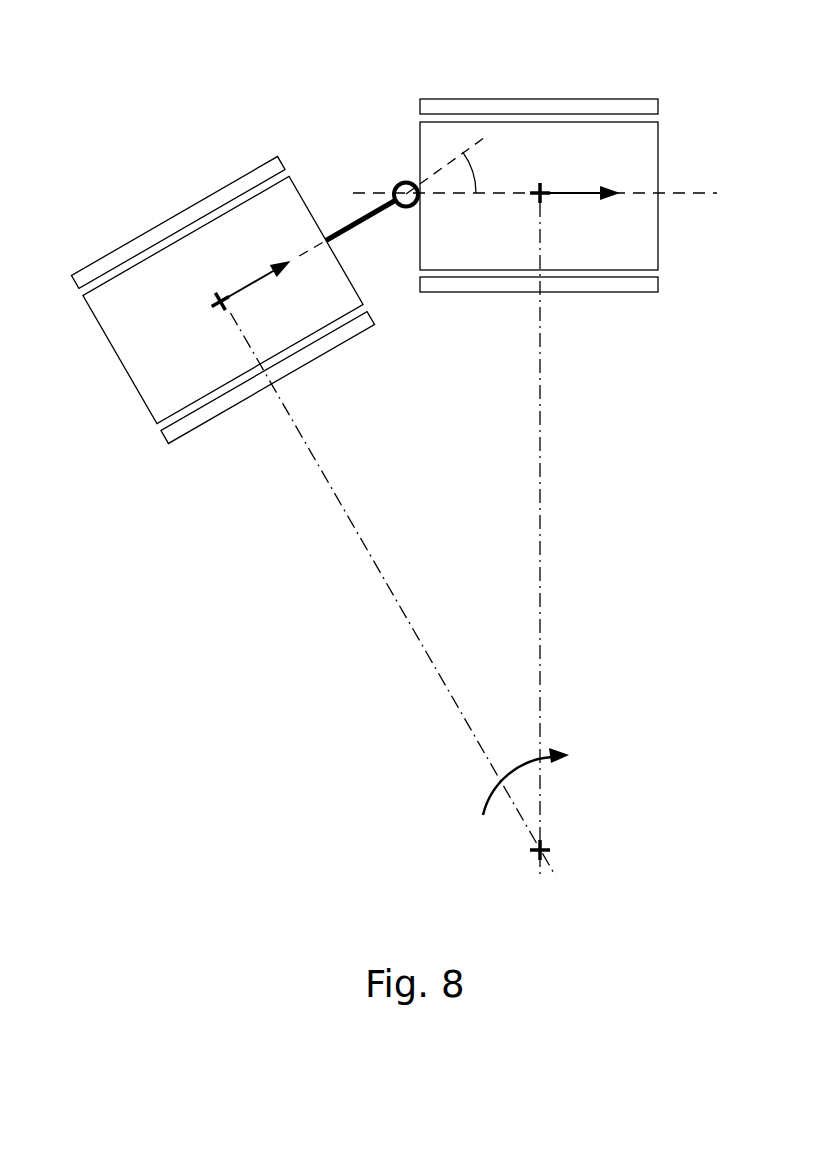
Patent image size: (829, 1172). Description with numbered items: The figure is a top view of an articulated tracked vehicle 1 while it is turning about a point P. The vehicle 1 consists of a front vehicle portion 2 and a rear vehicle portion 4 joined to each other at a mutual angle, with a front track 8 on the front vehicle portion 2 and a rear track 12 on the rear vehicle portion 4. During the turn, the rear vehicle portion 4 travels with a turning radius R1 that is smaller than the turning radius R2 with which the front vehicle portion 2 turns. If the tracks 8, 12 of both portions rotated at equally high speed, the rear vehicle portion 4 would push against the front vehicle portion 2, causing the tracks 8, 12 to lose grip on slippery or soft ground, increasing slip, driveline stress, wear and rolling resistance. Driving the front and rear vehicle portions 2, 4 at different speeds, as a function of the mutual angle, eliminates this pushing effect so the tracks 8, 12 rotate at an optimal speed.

The articulated tracked vehicle 1 is at (340, 88).
The front vehicle portion 2 is at (658, 133).
The rear vehicle portion 4 is at (130, 375).
The front track 8 is at (463, 98).
The rear track 12 is at (210, 193).
The turning radius R1 is at (353, 530).
The turning radius R2 is at (542, 447).
The point P is at (550, 843).